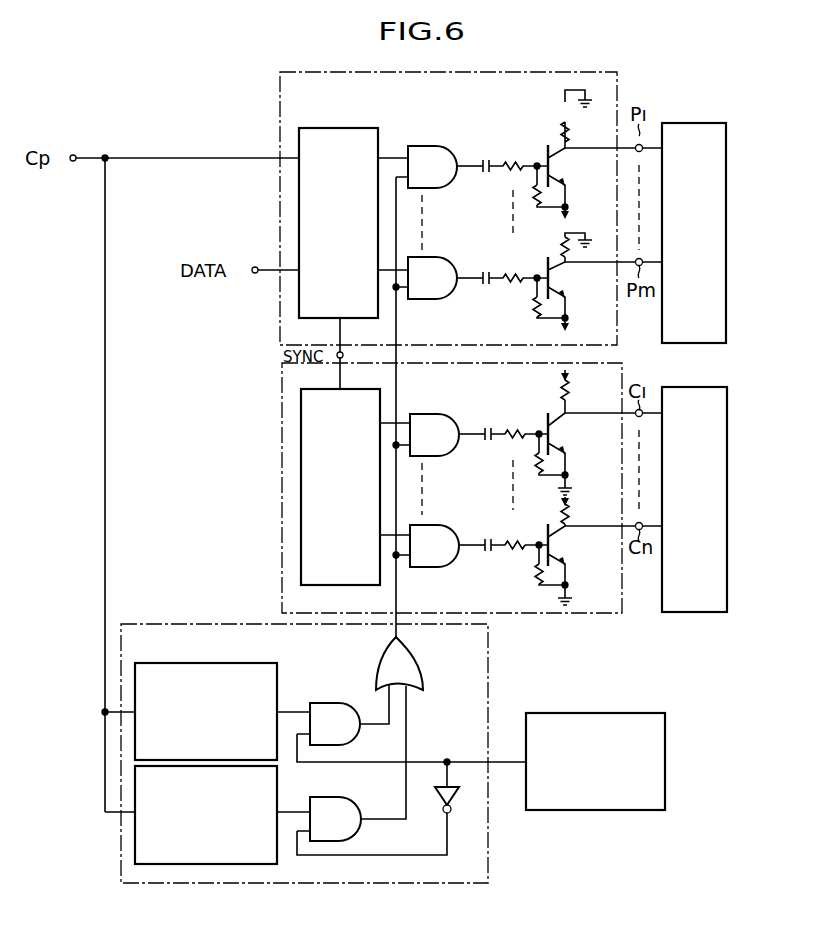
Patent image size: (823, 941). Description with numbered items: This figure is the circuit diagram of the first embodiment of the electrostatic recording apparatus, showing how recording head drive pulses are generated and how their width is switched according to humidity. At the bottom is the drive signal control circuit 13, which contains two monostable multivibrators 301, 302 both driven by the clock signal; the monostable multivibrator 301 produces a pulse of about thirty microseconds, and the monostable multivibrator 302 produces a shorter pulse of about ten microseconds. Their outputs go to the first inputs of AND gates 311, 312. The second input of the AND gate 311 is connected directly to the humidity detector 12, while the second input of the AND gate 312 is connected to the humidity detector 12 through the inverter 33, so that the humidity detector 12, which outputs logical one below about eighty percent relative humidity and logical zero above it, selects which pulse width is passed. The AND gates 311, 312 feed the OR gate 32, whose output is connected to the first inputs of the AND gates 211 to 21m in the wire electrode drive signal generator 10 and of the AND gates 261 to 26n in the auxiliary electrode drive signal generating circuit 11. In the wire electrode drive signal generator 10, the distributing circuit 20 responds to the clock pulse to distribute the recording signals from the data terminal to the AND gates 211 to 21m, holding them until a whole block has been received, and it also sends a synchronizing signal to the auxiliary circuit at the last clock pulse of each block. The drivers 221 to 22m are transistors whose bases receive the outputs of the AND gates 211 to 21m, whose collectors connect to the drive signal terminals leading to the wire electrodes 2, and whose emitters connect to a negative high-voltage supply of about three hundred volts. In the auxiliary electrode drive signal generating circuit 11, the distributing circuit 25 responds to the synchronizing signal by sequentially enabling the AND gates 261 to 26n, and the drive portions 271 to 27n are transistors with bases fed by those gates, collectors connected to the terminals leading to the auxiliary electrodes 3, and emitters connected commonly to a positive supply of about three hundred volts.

The wire electrode drive signal generator 10 is at (565, 72).
The distributing circuit 20 is at (341, 128).
The AND gate 211 is at (448, 146).
The AND gate 21m is at (452, 257).
The driver 221 is at (535, 158).
The driver 22m is at (539, 268).
The wire electrodes 2 is at (700, 123).
The auxiliary electrode drive signal generating circuit 11 is at (607, 370).
The distributing circuit 25 is at (350, 389).
The AND gate 261 is at (450, 414).
The AND gate 26n is at (450, 525).
The drive portion 271 is at (537, 425).
The drive portion 27n is at (540, 538).
The auxiliary electrode rows 3 is at (690, 387).
The drive signal control circuit 13 is at (488, 680).
The monostable multivibrator 301 is at (215, 663).
The monostable multivibrator 302 is at (135, 841).
The AND gate 311 is at (345, 703).
The AND gate 312 is at (356, 837).
The OR gate 32 is at (422, 661).
The inverter 33 is at (453, 795).
The humidity detector 12 is at (618, 713).